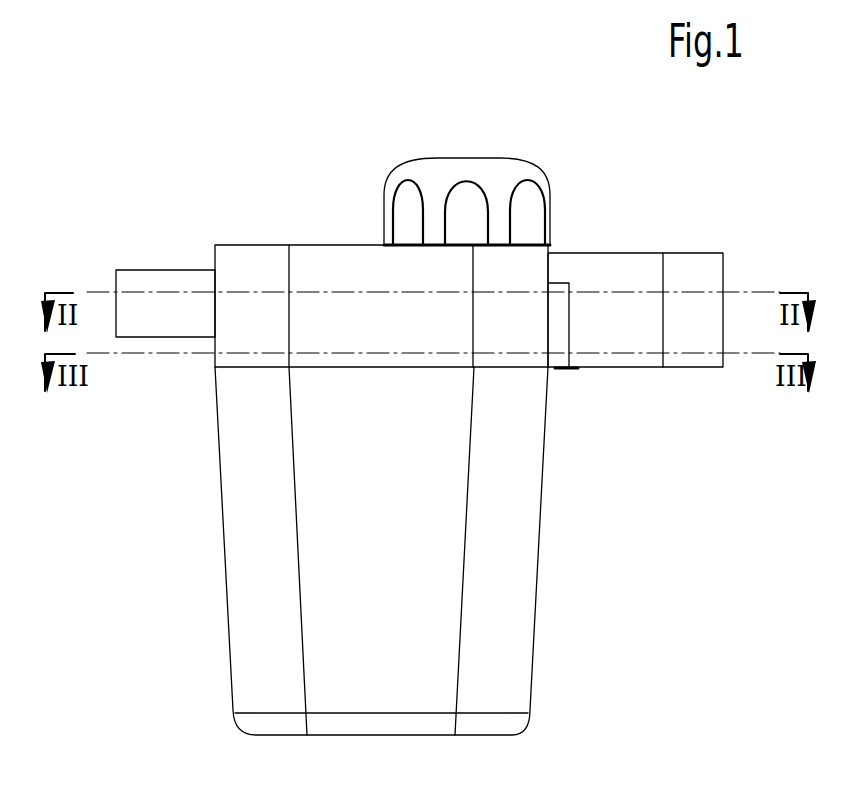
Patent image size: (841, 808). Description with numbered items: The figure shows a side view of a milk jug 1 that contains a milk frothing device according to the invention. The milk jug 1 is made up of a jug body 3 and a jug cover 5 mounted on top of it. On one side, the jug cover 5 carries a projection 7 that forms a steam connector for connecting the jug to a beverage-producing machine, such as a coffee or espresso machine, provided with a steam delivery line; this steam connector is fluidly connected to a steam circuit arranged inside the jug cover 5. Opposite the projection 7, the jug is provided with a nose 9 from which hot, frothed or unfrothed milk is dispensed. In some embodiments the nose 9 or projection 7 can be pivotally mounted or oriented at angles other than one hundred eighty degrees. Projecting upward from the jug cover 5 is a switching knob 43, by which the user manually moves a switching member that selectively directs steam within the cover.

The milk jug 1 is at (396, 132).
The jug body 3 is at (503, 541).
The jug cover 5 is at (329, 258).
The projection 7 is at (152, 286).
The nose 9 is at (618, 287).
The switching knob 43 is at (410, 207).